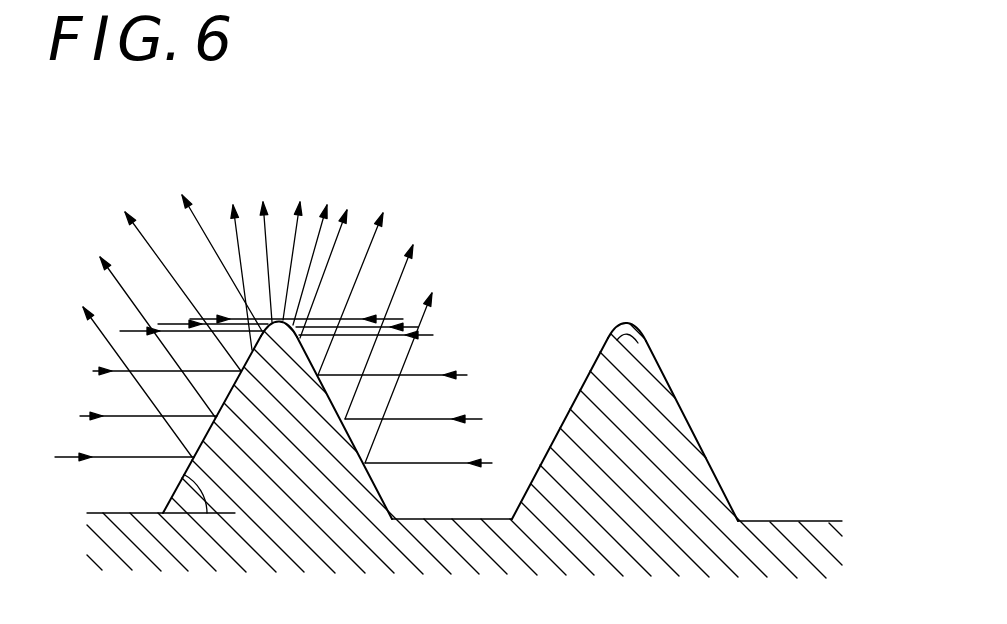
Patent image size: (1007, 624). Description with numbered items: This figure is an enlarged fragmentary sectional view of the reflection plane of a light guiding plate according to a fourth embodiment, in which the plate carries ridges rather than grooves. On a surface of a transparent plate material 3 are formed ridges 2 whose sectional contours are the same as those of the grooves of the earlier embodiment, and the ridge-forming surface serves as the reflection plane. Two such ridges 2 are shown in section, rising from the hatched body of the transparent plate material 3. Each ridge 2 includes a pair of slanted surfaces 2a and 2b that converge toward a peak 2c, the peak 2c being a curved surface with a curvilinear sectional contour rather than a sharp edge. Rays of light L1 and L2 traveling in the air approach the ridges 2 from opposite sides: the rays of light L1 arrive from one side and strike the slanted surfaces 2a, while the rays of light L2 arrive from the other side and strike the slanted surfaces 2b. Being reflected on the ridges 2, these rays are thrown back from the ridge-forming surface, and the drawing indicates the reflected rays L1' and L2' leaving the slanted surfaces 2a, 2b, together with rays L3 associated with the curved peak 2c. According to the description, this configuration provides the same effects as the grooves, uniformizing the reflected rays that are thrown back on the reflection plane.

The ridge 2 is at (426, 387).
The slanted surface 2a is at (184, 472).
The slanted surface 2b is at (382, 489).
The peak 2c is at (627, 323).
The transparent plate material 3 is at (653, 557).
The ray of light L1 is at (225, 388).
The light reflected by first inclined surface L1' is at (172, 307).
The ray of light L2 is at (407, 395).
The light reflected by second inclined surface L2' is at (400, 327).
The light emitted from apex L3 is at (320, 230).